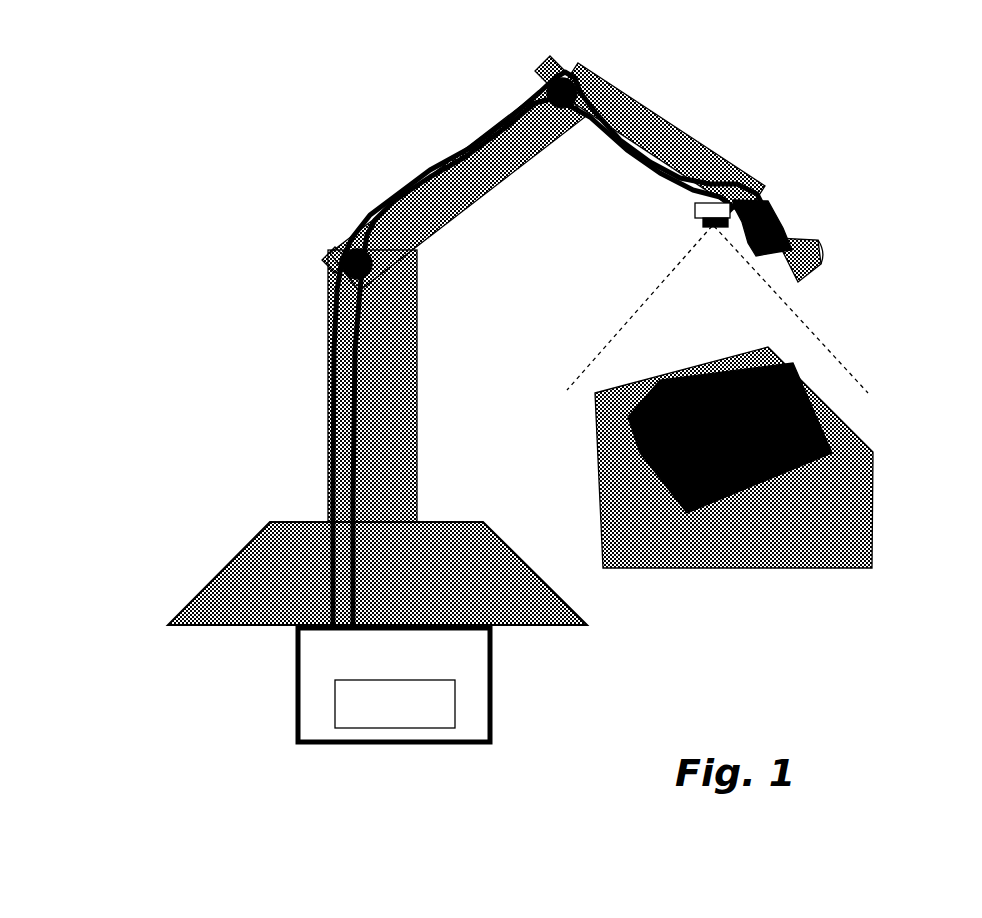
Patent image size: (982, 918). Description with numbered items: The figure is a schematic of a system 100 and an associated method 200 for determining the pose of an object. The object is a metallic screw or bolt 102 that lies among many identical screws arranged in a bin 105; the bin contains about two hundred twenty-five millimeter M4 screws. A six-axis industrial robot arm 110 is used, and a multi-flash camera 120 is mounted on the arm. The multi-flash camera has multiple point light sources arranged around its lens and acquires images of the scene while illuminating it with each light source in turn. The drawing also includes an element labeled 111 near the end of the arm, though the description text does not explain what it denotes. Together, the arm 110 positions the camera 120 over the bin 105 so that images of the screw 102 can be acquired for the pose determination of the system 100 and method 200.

The system 100 is at (565, 447).
The industrial robot arm 110 is at (670, 145).
The gripper 111 is at (772, 212).
The metallic screw or bolt 102 is at (806, 274).
The multi-flash camera 120 is at (697, 207).
The bin 105 is at (717, 333).
The method 200 is at (458, 707).